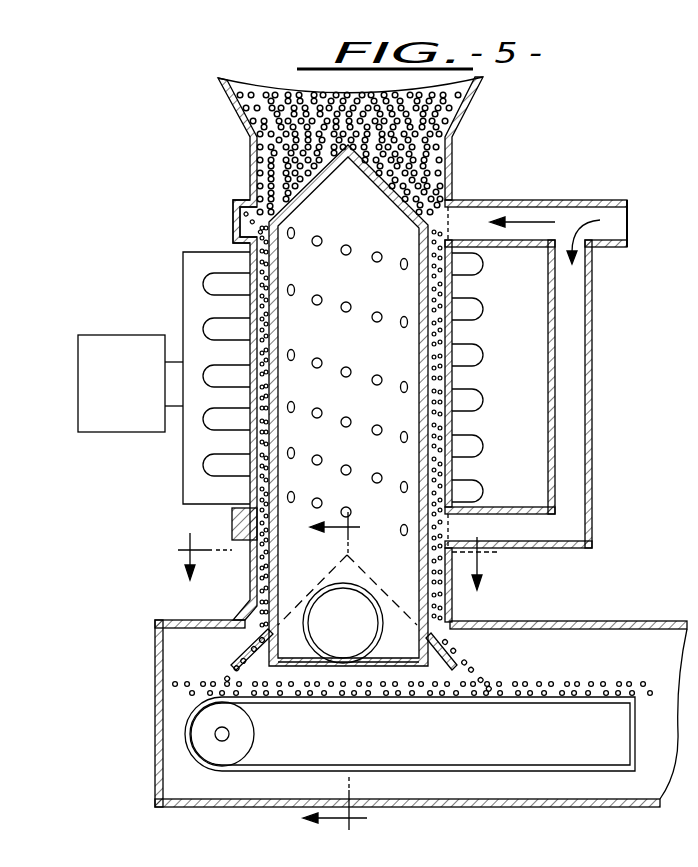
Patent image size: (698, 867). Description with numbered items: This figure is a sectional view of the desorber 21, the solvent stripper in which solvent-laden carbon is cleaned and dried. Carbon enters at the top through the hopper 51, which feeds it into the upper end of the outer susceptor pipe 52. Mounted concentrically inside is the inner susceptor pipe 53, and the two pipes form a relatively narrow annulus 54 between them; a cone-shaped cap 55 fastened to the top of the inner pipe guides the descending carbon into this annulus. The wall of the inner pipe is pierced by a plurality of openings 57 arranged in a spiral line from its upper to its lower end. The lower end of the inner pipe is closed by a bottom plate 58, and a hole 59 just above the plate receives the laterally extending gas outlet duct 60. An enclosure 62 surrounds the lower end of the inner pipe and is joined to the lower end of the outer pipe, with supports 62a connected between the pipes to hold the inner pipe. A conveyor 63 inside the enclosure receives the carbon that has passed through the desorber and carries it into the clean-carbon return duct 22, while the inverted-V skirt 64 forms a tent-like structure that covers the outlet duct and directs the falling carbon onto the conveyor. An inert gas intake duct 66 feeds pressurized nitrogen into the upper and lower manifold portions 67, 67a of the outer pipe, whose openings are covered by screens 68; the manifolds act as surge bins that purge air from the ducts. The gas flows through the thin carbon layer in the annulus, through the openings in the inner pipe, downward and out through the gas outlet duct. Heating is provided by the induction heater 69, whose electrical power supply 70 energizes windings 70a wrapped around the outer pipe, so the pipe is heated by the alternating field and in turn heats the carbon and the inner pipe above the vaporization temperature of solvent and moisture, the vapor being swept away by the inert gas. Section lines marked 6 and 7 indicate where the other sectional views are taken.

The desorber 21 is at (170, 230).
The clean-carbon return duct 22 is at (660, 612).
The hopper 51 is at (227, 100).
The outer susceptor pipe 52 is at (252, 165).
The inner susceptor pipe 53 is at (265, 292).
The annulus 54 is at (260, 438).
The cone-shaped cap 55 is at (360, 147).
The openings 57 is at (376, 258).
The bottom plate 58 is at (393, 665).
The hole 59 is at (363, 608).
The gas outlet duct 60 is at (310, 650).
The enclosure 62 is at (155, 632).
The supports 62a is at (240, 642).
The conveyor 63 is at (600, 698).
The skirt 64 is at (455, 668).
The inert gas intake duct 66 is at (565, 200).
The upper manifold portion 67 is at (235, 203).
The lower manifold portion 67a is at (232, 522).
The screens 68 is at (255, 222).
The induction heater 69 is at (495, 372).
The electrical power supply 70 is at (125, 335).
The windings 70a is at (483, 348).
The section line 6- 6 is at (343, 675).
The section line 7- 7 is at (328, 561).